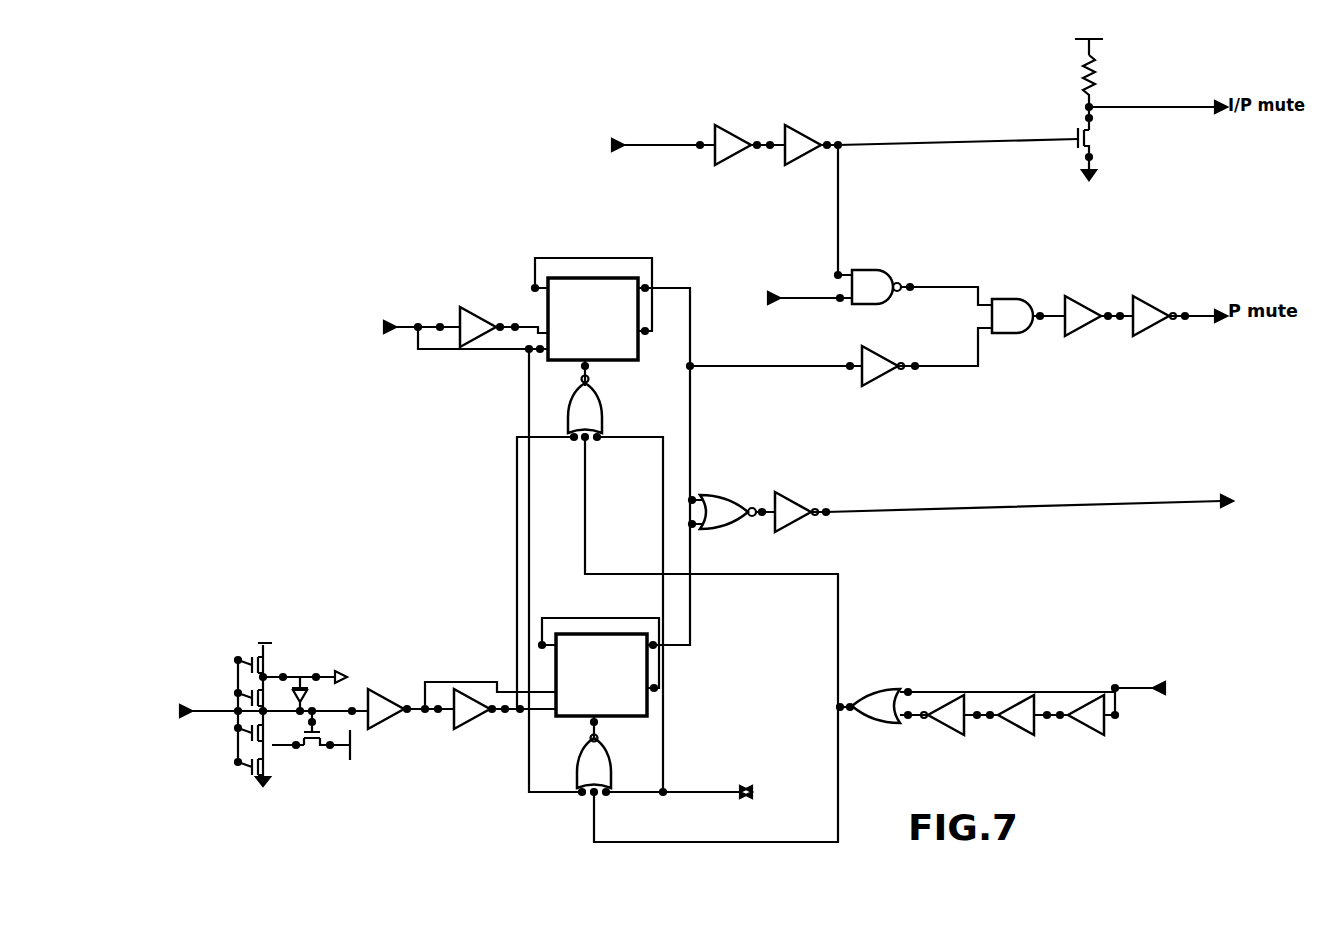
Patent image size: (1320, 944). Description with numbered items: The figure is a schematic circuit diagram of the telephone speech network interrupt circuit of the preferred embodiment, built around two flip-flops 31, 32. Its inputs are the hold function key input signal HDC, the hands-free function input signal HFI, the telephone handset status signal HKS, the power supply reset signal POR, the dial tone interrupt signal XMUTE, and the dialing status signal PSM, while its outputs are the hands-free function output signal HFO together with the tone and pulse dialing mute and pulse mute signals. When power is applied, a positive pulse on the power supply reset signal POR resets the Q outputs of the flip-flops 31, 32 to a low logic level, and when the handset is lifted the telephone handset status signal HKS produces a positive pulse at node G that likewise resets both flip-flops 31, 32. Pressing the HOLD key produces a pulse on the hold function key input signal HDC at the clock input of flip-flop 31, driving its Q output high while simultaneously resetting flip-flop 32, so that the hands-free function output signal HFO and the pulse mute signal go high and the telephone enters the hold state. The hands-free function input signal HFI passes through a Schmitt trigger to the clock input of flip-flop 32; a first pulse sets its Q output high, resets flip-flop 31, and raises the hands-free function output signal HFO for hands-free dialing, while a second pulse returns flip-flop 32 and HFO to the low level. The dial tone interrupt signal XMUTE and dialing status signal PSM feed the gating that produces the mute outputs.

The flip-flop 31 is at (558, 296).
The flip-flop 32 is at (580, 648).
The dial tone interrupt signal XMUTE is at (809, 200).
The dialing status signal PSM is at (858, 290).
The hold function key input signal HDC is at (462, 549).
The hands-free function output signal HFO is at (979, 511).
The hands-free function input signal HFI is at (348, 714).
The power supply reset signal POR is at (681, 768).
The node G is at (856, 705).
The telephone handset status signal HKS is at (1052, 705).